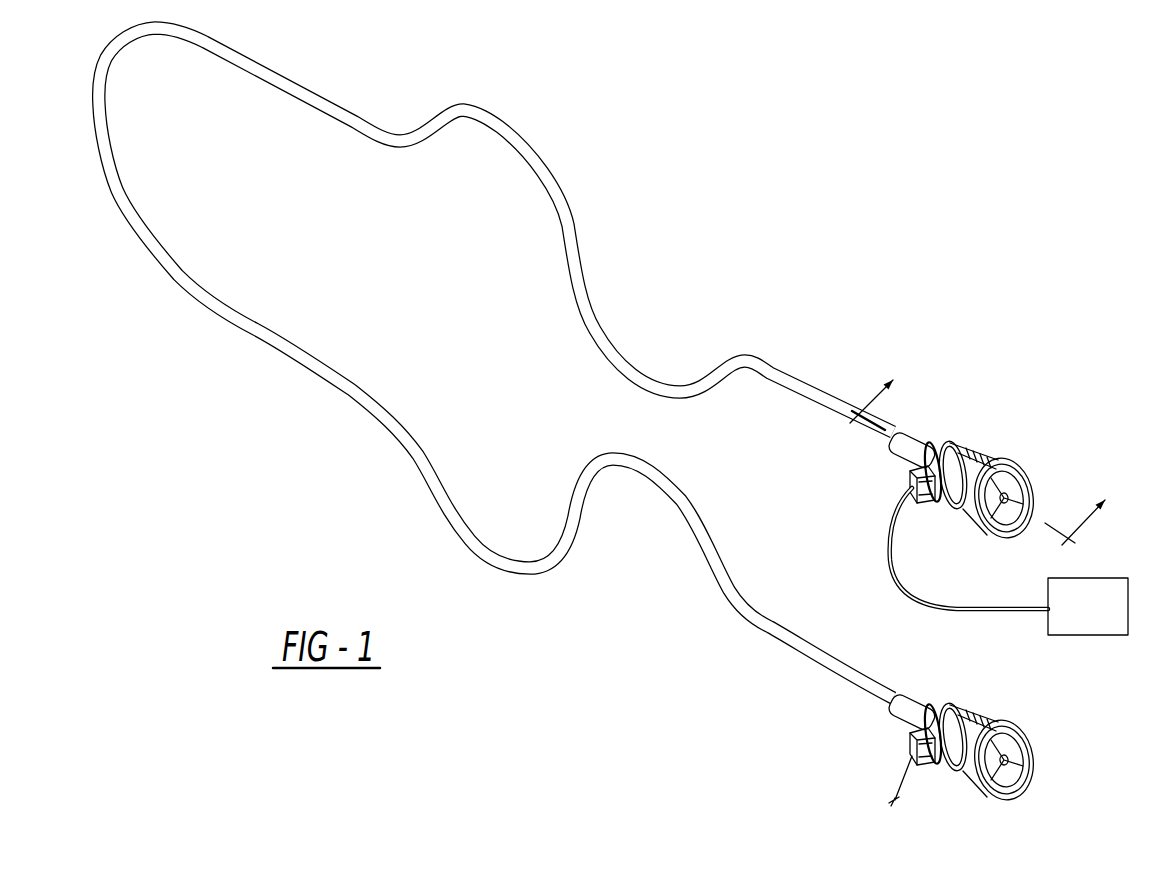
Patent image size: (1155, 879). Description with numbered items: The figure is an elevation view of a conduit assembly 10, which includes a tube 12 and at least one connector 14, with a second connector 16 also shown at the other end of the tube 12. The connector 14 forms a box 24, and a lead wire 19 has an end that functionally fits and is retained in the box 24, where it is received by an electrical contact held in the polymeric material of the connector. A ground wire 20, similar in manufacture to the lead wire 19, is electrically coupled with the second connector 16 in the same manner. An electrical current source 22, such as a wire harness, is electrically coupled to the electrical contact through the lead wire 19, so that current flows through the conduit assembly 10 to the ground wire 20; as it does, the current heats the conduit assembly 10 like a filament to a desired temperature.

The conduit assembly 10 is at (615, 417).
The tube 12 is at (490, 112).
The connector 14 is at (965, 416).
The second connector 16 is at (902, 725).
The lead wire 19 is at (915, 596).
The ground wire 20 is at (897, 779).
The electrical current source 22 is at (1080, 635).
The box 24 is at (943, 443).